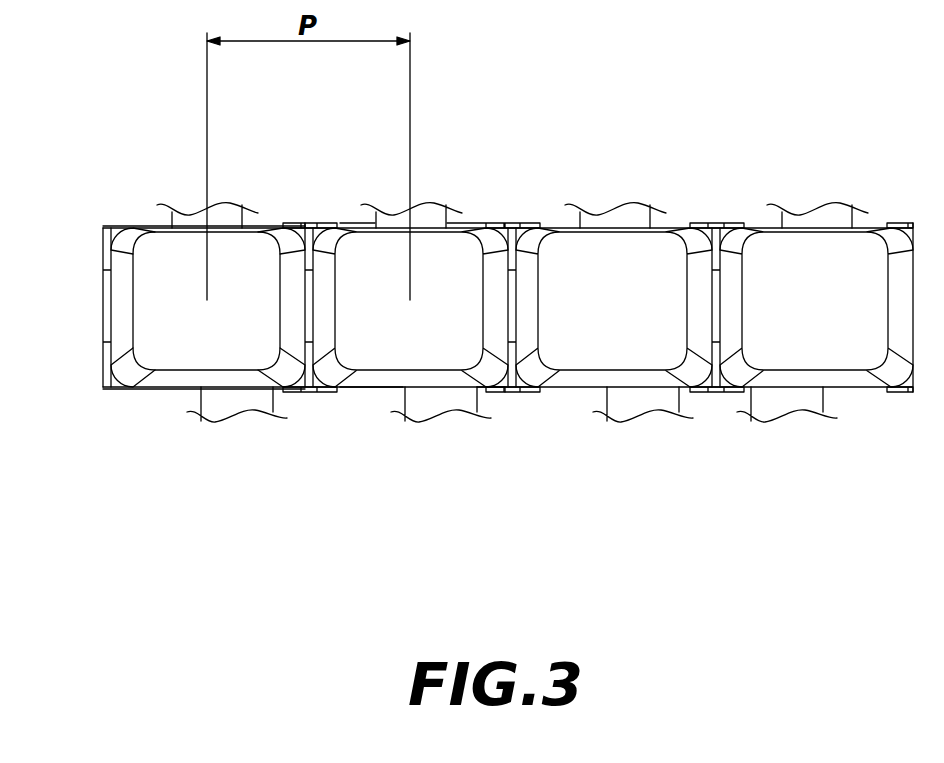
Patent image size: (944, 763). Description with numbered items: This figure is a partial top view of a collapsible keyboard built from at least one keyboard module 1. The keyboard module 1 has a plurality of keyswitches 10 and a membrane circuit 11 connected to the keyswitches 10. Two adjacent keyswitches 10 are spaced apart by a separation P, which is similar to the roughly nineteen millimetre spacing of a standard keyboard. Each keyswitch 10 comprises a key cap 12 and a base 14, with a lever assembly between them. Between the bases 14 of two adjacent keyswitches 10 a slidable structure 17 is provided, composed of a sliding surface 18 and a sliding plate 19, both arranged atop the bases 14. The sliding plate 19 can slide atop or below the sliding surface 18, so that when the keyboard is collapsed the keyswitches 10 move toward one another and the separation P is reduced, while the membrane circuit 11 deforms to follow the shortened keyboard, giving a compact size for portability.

The keyboard module 1 is at (605, 53).
The keyswitch 10 is at (133, 418).
The membrane circuit 11 is at (308, 342).
The key cap 12 is at (145, 253).
The base 14 is at (366, 392).
The slidable structure 17 is at (303, 157).
The sliding surface 18 is at (300, 223).
The sliding plate 19 is at (323, 223).